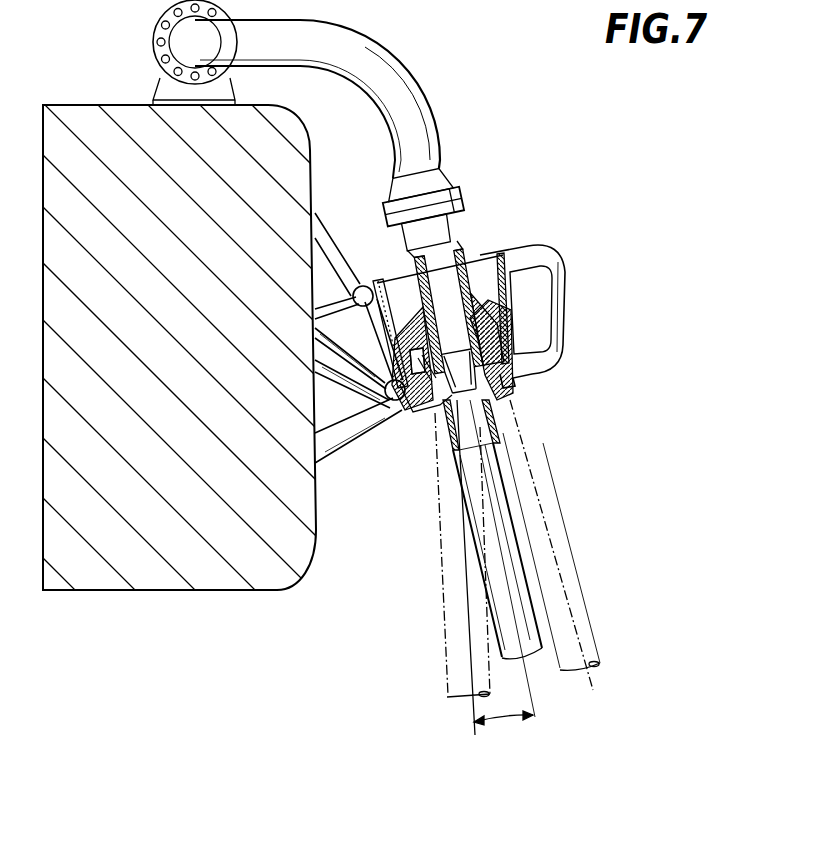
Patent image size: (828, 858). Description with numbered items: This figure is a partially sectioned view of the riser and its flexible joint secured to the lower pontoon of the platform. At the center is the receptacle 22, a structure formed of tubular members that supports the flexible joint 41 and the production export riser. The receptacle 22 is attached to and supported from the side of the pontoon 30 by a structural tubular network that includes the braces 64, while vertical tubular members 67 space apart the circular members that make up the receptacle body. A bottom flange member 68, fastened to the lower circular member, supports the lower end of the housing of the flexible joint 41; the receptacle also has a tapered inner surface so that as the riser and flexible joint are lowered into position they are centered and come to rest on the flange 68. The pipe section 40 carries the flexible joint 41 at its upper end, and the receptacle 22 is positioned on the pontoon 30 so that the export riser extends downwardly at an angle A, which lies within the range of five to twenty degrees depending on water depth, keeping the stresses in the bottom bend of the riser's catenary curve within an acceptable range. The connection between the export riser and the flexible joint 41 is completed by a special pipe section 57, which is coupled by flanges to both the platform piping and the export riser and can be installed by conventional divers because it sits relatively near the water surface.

The receptacle 22 is at (567, 293).
The pontoon 30 is at (172, 594).
The pipe section 40 is at (520, 568).
The flexible joint 41 is at (484, 243).
The special pipe section 57 is at (408, 70).
The braces 64 is at (339, 232).
The vertical tubular members 67 is at (348, 450).
The bottom flange member 68 is at (421, 412).
The angle A is at (508, 722).